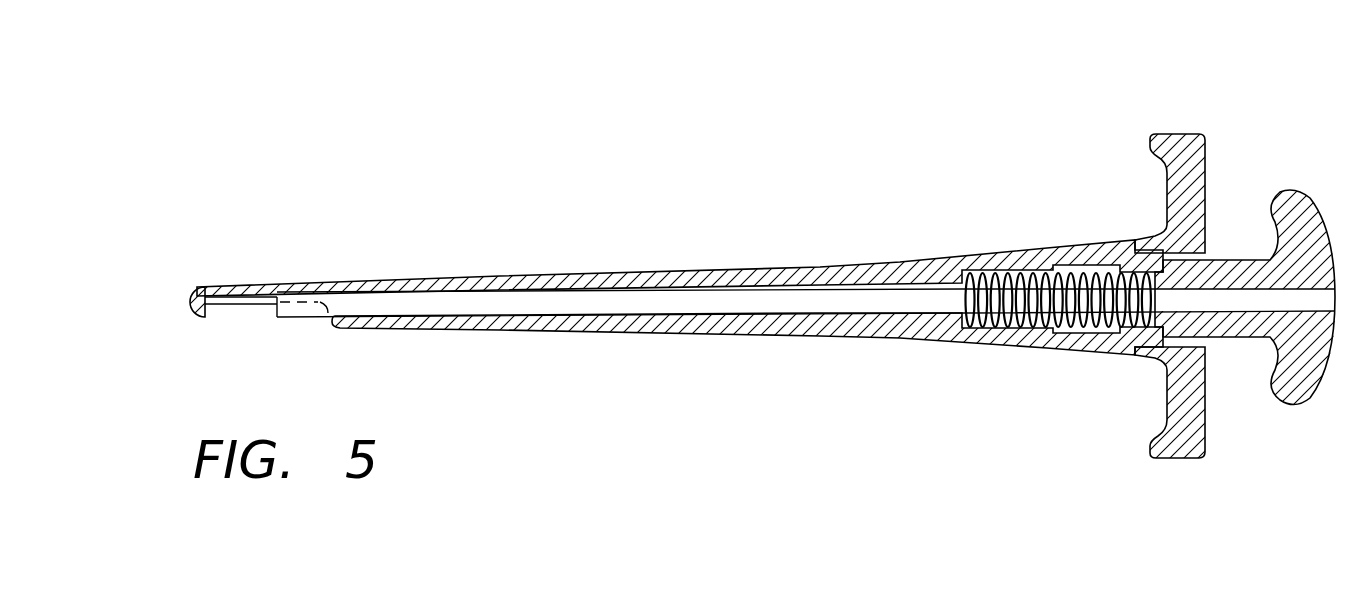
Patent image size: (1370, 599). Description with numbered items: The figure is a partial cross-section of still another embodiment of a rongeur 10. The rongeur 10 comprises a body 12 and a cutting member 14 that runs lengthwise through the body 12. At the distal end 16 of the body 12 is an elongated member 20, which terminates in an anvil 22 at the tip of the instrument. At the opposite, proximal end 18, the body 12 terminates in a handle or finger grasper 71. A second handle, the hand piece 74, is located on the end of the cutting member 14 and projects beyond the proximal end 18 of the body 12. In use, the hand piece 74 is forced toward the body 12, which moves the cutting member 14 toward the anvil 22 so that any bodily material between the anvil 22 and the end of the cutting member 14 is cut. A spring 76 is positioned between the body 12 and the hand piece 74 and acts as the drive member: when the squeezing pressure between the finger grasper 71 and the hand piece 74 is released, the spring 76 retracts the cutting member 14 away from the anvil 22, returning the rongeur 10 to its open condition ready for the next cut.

The rongeur 10 is at (852, 250).
The body 12 is at (763, 327).
The cutting member 14 is at (663, 305).
The distal end 16 is at (242, 283).
The proximal end 18 is at (1225, 165).
The elongated member 20 is at (297, 285).
The anvil 22 is at (197, 283).
The finger grasper 71 is at (1163, 457).
The hand piece 74 is at (1302, 402).
The spring 76 is at (1075, 332).